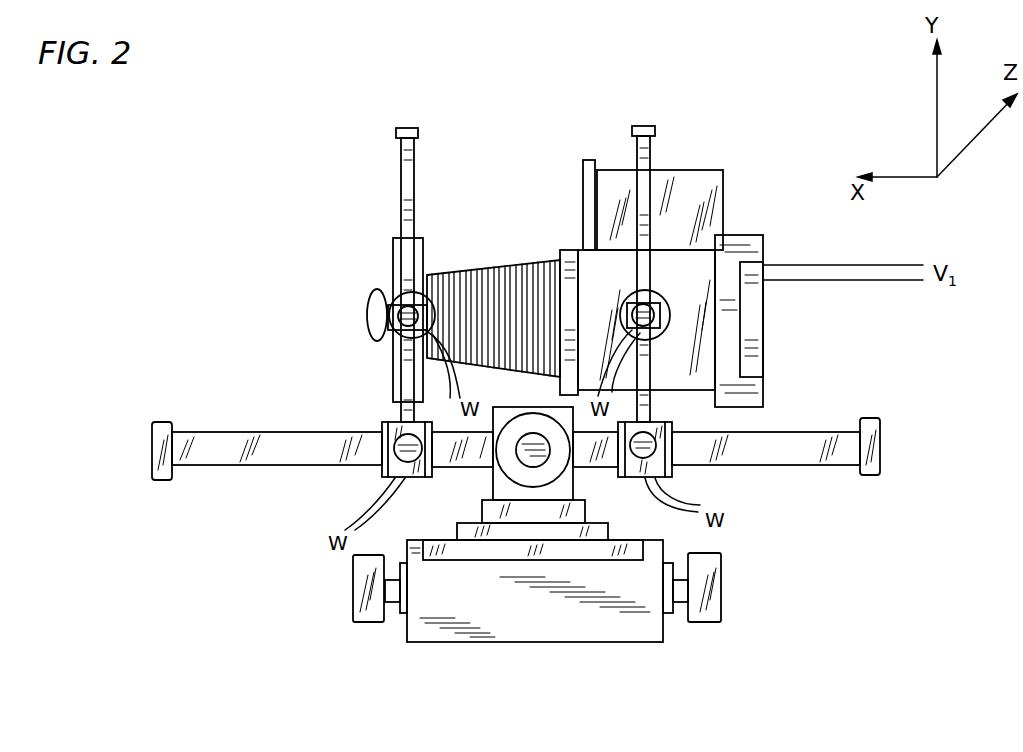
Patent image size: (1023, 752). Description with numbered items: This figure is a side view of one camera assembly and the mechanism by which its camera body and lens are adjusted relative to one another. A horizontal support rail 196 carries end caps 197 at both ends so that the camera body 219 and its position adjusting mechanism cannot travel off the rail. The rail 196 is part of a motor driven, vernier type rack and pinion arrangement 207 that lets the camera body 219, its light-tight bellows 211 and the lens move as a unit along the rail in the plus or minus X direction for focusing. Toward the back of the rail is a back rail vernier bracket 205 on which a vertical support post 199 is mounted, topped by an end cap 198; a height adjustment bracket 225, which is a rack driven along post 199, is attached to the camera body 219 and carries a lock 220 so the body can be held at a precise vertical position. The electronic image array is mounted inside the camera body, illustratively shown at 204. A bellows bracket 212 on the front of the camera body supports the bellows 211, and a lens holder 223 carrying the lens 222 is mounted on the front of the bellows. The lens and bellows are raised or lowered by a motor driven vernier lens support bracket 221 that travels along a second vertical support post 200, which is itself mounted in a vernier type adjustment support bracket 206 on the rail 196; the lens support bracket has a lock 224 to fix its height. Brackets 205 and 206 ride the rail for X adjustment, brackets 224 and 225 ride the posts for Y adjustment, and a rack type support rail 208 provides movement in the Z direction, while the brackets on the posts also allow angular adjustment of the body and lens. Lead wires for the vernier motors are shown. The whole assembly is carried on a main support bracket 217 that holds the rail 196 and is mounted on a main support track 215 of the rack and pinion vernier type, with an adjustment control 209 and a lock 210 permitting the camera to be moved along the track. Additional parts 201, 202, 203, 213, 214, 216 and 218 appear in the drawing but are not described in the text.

The horizontal support rail 196 is at (837, 432).
The end caps 197 is at (152, 449).
The end cap 198 is at (418, 133).
The vertical support post 199 is at (650, 152).
The vertical support post 200 is at (401, 181).
The upper camera body 201 is at (723, 181).
The post 202 is at (590, 160).
The inner plate 203 is at (763, 257).
The electronic image array 204 is at (765, 330).
The back rail vernier bracket 205 is at (672, 472).
The vernier type adjustment support bracket 206 is at (382, 474).
The rack and pinion arrangement 207 is at (394, 450).
The support rail 208 is at (656, 444).
The adjustment control 209 is at (721, 590).
The lock 210 is at (353, 591).
The light-tight bellows 211 is at (500, 262).
The bellows bracket 212 is at (568, 250).
The left stub 213 is at (402, 615).
The right stub 214 is at (675, 614).
The main support track 215 is at (495, 640).
The stepped pedestal 216 is at (585, 515).
The main support bracket 217 is at (573, 484).
The center pivot 218 is at (522, 462).
The camera body 219 is at (695, 250).
The lock 220 is at (662, 316).
The lens support bracket 221 is at (388, 345).
The lens 222 is at (368, 315).
The lens holder 223 is at (393, 390).
The lock 224 is at (397, 300).
The height adjustment bracket 225 is at (658, 328).